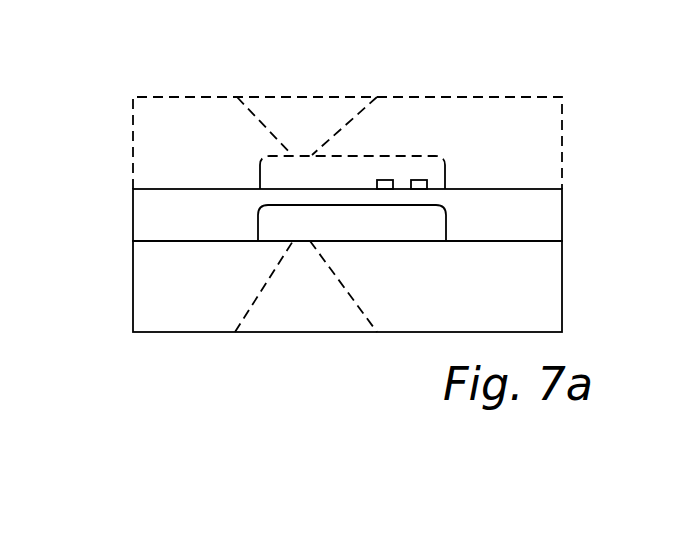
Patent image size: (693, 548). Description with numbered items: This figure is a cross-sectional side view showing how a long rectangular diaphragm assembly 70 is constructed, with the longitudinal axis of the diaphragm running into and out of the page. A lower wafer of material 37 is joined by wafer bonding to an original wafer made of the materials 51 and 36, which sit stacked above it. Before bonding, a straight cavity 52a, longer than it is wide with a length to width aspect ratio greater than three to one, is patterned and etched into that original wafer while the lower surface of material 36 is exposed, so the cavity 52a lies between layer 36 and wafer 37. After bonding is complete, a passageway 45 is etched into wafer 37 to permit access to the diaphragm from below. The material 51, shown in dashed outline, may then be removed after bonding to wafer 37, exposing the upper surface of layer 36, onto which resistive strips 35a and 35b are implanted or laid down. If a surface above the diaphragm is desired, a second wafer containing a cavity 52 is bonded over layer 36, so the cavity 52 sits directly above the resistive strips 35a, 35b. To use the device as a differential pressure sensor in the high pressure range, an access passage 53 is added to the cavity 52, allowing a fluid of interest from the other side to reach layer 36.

The long rectangular diaphragm assembly 70 is at (323, 90).
The wafer material 51 is at (133, 98).
The access passage 53 is at (317, 138).
The cavity 52 is at (267, 170).
The straight cavity 52a is at (402, 230).
The resistive strip 35a is at (388, 180).
The resistive strip 35b is at (423, 180).
The layer material 36 is at (562, 212).
The wafer material 37 is at (553, 322).
The passageway 45 is at (319, 324).